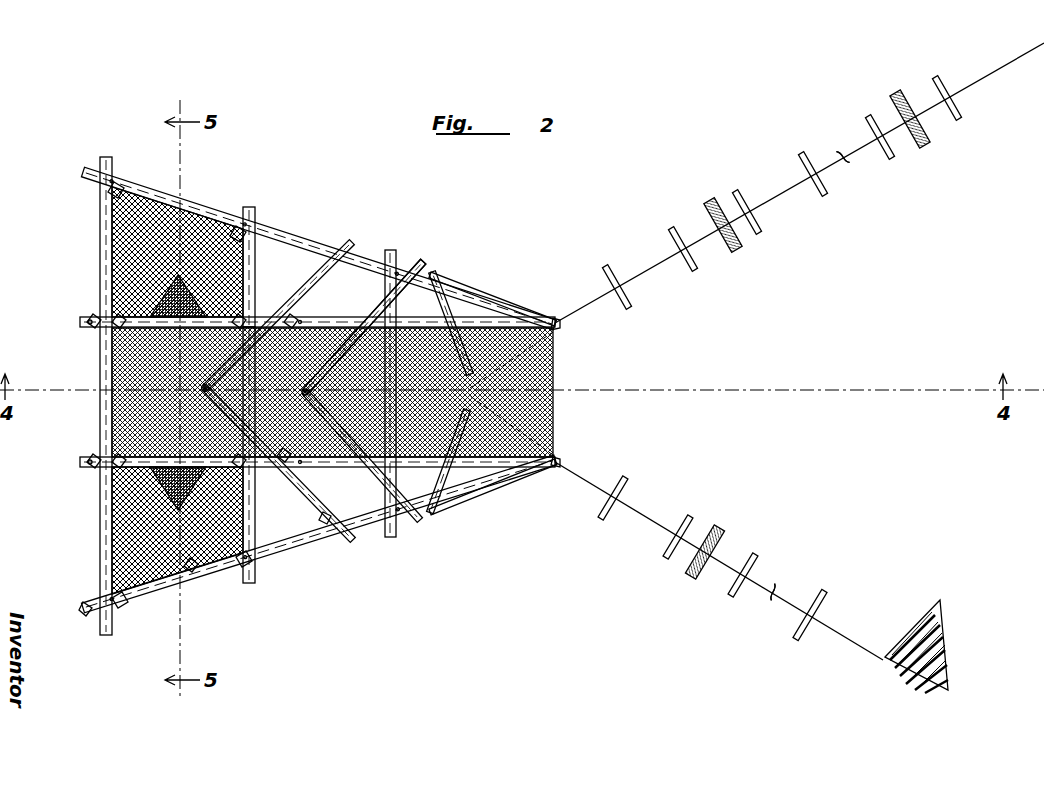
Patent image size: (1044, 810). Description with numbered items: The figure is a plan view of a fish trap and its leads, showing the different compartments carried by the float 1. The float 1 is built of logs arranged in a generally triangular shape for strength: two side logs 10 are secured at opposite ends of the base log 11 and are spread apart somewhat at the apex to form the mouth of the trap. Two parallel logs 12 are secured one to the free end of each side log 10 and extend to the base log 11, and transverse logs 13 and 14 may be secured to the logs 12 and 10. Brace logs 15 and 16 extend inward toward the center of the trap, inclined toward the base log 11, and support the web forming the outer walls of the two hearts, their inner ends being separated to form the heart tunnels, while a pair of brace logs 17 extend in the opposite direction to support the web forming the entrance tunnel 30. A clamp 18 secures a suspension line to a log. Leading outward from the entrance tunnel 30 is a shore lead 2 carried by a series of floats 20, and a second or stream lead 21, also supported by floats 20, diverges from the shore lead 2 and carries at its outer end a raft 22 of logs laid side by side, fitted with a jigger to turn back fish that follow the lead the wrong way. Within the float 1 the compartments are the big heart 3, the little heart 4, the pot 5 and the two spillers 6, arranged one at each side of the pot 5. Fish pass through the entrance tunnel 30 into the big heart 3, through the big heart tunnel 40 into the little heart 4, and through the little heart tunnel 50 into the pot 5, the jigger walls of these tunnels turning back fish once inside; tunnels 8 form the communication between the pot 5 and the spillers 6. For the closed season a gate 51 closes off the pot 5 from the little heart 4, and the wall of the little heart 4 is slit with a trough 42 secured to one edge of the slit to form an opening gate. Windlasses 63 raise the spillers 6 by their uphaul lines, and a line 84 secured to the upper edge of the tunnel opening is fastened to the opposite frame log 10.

The float 1 is at (202, 390).
The shore lead 2 is at (652, 264).
The big heart 3 is at (482, 312).
The little heart 4 is at (315, 372).
The pot 5 is at (100, 352).
The spillers 6 is at (100, 232).
The tunnels 8 is at (170, 293).
The side logs 10 is at (310, 210).
The base log 11 is at (100, 436).
The parallel logs 12 is at (308, 318).
The transverse log 13 is at (250, 490).
The transverse log 14 is at (438, 514).
The brace log 15 is at (376, 310).
The brace log 16 is at (290, 316).
The brace logs 17 is at (460, 303).
The clamp 18 is at (560, 465).
The floats 20 is at (806, 166).
The stream lead 21 is at (665, 528).
The raft 22 is at (920, 632).
The entrance tunnel 30 is at (520, 382).
The big heart tunnel 40 is at (310, 400).
The trough 42 is at (300, 432).
The little heart tunnel 50 is at (205, 388).
The gate 51 is at (207, 387).
The windlasses 63 is at (248, 210).
The line 84 is at (192, 566).